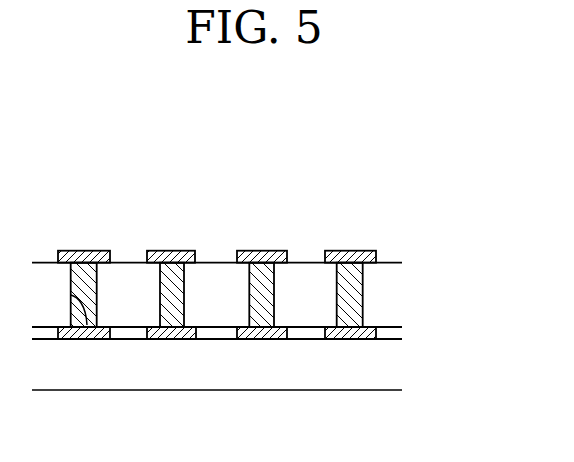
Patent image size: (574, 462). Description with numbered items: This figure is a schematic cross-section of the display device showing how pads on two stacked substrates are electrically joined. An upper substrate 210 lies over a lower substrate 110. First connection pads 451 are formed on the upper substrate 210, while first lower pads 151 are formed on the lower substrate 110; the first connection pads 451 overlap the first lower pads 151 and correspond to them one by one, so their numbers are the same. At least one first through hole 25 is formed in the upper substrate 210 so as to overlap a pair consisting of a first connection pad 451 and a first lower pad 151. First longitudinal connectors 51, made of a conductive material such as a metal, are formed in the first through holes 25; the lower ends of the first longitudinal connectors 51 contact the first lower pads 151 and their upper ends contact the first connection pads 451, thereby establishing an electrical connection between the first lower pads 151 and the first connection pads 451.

The upper substrate 210 is at (388, 293).
The lower substrate 110 is at (388, 365).
The first connection pads 451 is at (85, 250).
The first lower pads 151 is at (98, 340).
The first longitudinal connectors 51 is at (175, 298).
The first through hole 25 is at (84, 329).